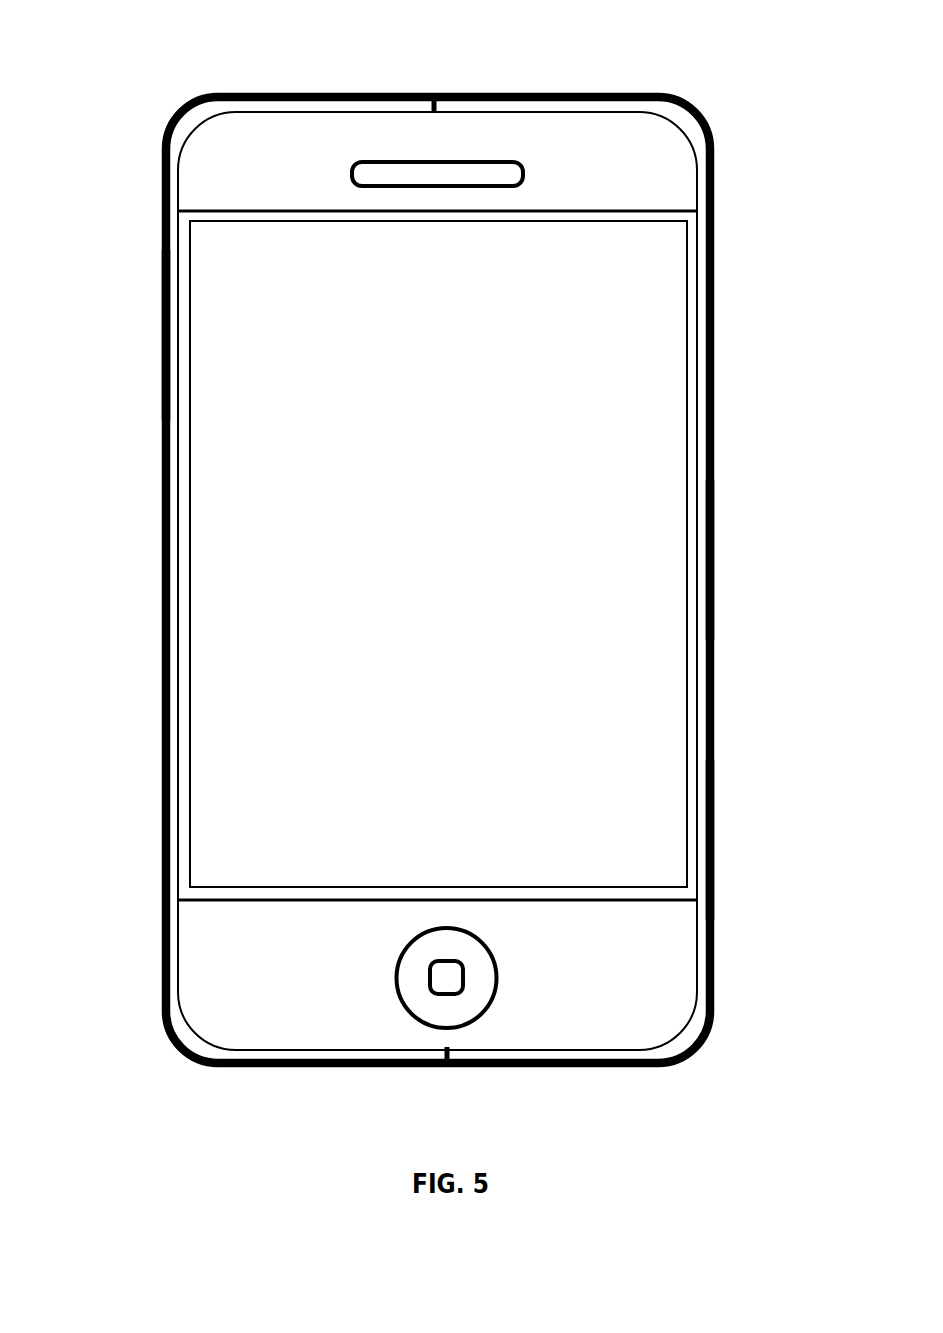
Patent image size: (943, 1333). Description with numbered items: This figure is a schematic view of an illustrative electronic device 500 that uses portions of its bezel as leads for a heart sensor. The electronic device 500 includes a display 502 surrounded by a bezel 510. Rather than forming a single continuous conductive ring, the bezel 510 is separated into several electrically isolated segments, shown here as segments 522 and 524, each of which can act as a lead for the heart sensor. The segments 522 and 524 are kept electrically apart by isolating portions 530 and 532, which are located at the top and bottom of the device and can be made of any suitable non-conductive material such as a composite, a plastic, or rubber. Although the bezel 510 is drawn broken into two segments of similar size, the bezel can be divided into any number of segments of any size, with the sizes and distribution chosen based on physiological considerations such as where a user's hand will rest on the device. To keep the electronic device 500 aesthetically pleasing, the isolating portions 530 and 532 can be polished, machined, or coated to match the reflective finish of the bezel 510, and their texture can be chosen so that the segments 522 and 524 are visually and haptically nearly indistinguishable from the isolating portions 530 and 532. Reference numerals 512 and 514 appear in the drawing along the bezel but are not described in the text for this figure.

The electronic device 500 is at (612, 40).
The display 502 is at (657, 348).
The bezel 510 is at (175, 197).
The housing sidewall 512 is at (162, 343).
The housing sidewall 514 is at (714, 843).
The segment 522 is at (177, 539).
The segment 524 is at (704, 563).
The isolating portion 530 is at (435, 95).
The isolating portion 532 is at (447, 1067).